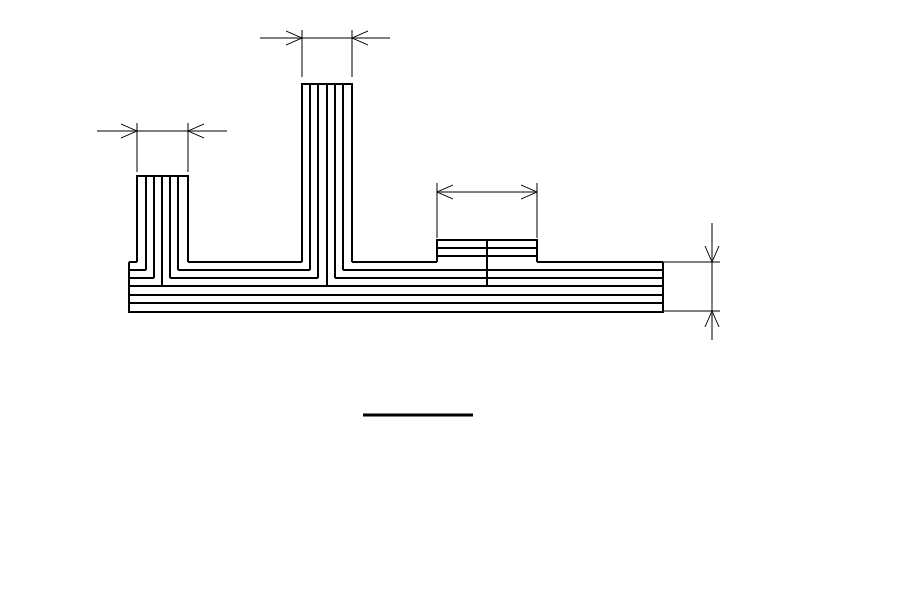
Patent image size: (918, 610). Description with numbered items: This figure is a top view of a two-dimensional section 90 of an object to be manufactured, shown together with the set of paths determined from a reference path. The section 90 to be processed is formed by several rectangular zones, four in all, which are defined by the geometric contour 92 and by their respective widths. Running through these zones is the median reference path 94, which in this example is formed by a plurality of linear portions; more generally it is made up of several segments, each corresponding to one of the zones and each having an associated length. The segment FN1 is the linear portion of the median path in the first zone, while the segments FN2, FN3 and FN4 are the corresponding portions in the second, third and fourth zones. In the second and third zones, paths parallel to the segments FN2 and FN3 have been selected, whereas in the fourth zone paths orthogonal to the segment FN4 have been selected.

The section 90 is at (520, 113).
The geometric contour 92 is at (128, 279).
The median reference path 94 is at (162, 249).
The segment of the median path in zone 1 FN1 is at (292, 286).
The segment of the median path in zone 2 FN2 is at (162, 233).
The segment of the median path in zone 3 FN3 is at (327, 174).
The segment of the median path in zone 4 FN4 is at (490, 262).